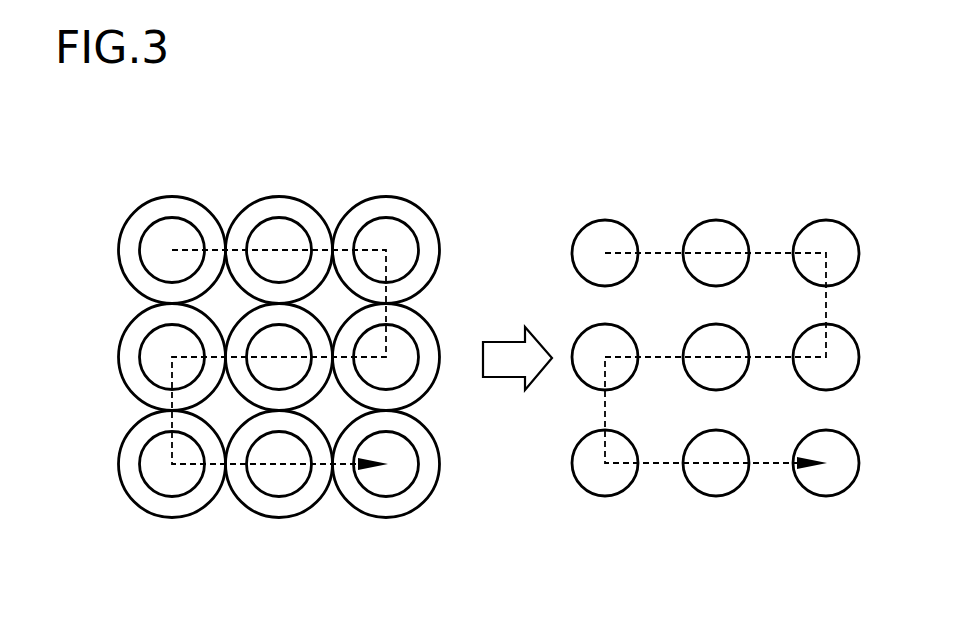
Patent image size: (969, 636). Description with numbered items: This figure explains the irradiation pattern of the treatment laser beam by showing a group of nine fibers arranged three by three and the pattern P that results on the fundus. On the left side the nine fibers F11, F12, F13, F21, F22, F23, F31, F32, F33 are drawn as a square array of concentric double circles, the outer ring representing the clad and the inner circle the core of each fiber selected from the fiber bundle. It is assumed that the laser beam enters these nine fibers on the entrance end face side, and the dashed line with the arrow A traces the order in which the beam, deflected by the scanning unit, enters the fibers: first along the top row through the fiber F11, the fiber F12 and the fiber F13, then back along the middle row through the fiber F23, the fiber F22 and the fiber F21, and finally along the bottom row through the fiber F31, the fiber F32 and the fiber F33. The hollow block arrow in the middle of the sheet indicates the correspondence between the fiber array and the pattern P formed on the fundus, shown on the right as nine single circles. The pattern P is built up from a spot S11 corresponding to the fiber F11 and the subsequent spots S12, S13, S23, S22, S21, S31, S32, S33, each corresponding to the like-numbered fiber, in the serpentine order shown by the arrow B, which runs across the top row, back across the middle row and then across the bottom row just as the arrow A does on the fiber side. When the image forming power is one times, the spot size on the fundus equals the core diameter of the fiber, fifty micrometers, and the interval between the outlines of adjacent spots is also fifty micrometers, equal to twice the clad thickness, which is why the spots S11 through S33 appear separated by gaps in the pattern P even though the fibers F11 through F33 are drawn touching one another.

The fiber F11 is at (172, 197).
The fiber F12 is at (279, 197).
The fiber F13 is at (386, 197).
The fiber F21 is at (118, 372).
The fiber F22 is at (236, 396).
The fiber F23 is at (427, 323).
The fiber F31 is at (118, 483).
The fiber F32 is at (282, 518).
The fiber F33 is at (388, 518).
The spot S11 is at (605, 220).
The spot S12 is at (716, 220).
The spot S13 is at (826, 220).
The spot S21 is at (582, 330).
The spot S22 is at (689, 331).
The spot S23 is at (801, 331).
The spot S31 is at (572, 468).
The spot S32 is at (684, 484).
The spot S33 is at (801, 487).
The arrow A is at (388, 266).
The arrow B is at (655, 250).
The pattern P is at (560, 196).